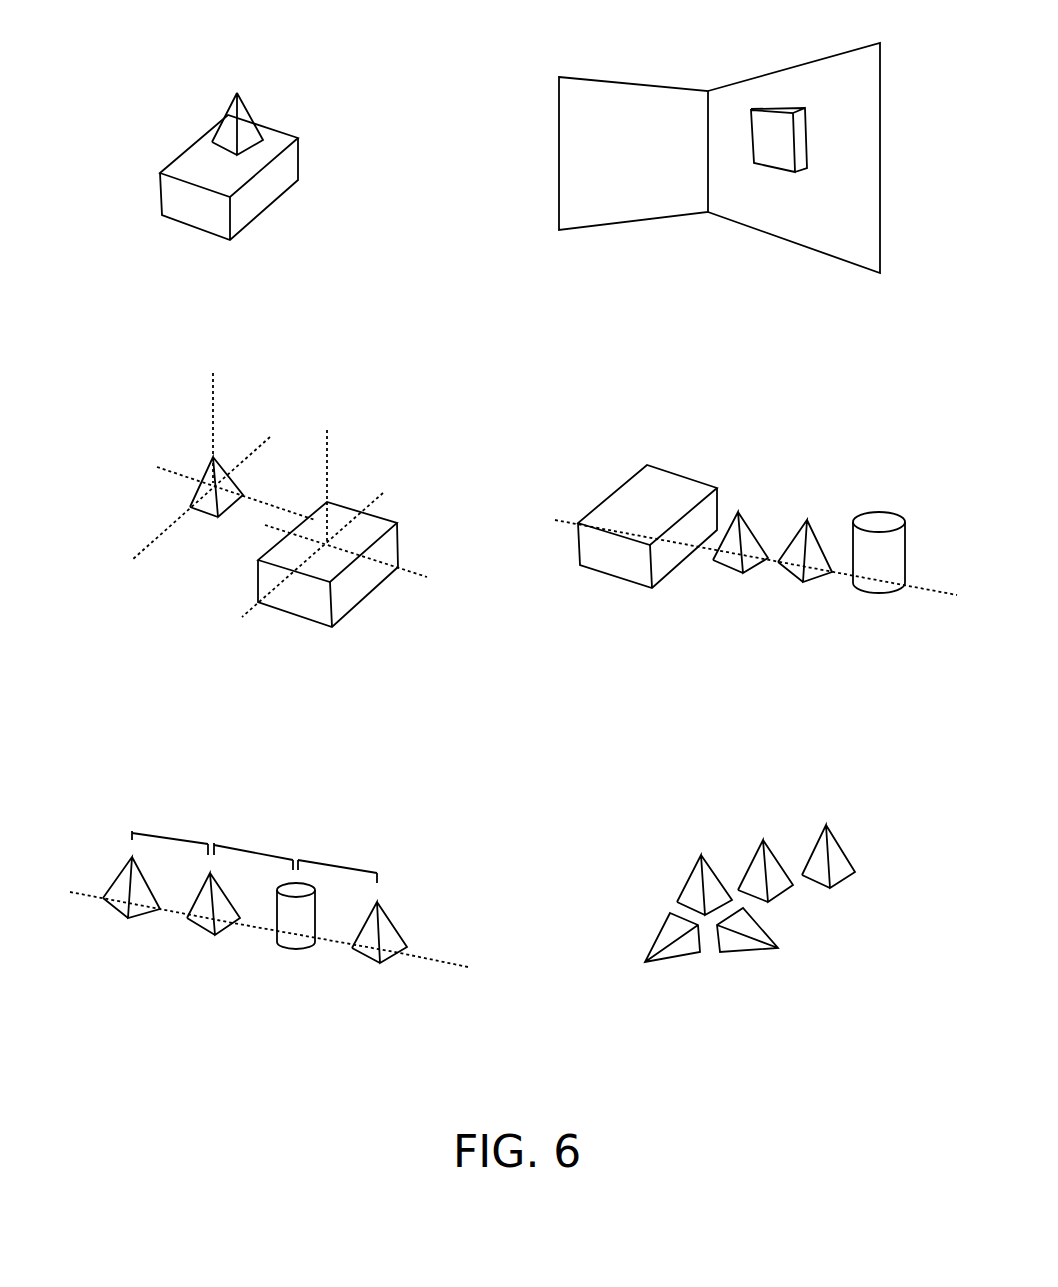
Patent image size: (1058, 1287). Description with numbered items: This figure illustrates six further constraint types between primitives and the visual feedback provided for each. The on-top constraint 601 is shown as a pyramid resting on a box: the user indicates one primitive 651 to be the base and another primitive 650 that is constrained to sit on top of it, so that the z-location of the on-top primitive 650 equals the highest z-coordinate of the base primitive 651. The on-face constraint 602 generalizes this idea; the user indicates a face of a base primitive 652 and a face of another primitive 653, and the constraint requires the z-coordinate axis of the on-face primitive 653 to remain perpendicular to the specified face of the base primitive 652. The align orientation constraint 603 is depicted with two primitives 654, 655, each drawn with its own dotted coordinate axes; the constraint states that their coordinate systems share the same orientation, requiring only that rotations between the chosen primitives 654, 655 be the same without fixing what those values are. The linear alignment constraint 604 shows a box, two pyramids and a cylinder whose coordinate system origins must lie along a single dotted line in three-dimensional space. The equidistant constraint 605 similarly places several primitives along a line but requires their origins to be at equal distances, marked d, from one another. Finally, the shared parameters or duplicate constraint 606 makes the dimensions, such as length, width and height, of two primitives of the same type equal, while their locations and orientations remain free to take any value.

The on-top primitive 650 is at (247, 103).
The base primitive 651 is at (303, 145).
The base primitive 652 is at (758, 75).
The on-face primitive 653 is at (802, 107).
The primitive 654 is at (192, 492).
The primitive 655 is at (375, 592).
The on-top constraint 601 is at (263, 187).
The on-face constraint 602 is at (719, 159).
The align orientation constraint 603 is at (247, 534).
The linear alignment constraint 604 is at (756, 576).
The equidistant constraint 605 is at (269, 932).
The shared parameters or duplicate constraint 606 is at (750, 931).